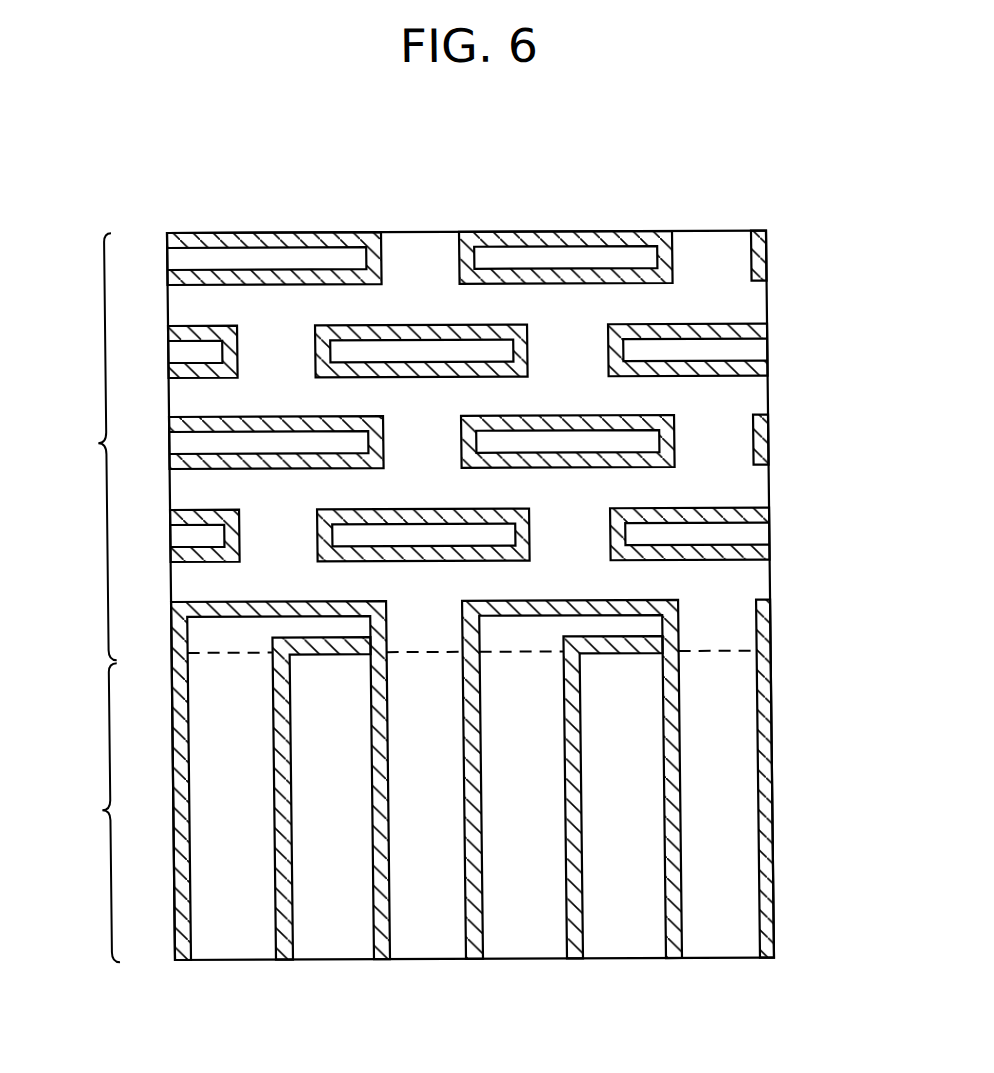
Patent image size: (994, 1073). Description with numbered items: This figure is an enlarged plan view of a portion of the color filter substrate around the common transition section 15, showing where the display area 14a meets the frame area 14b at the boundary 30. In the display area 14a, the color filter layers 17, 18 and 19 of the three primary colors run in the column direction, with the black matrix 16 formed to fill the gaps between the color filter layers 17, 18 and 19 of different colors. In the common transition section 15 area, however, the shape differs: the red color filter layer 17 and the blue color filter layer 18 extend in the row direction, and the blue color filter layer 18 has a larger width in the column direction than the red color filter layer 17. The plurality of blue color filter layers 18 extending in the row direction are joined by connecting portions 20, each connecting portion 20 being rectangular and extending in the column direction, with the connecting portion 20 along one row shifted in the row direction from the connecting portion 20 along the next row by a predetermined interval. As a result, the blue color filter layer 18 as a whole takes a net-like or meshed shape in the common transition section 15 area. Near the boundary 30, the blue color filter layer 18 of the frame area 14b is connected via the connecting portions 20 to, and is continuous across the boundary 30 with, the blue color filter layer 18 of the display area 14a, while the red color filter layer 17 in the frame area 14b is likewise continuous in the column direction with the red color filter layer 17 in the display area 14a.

The display area 14a is at (73, 812).
The frame area 14b is at (67, 446).
The common transition section 15 is at (285, 217).
The black matrix 16 is at (548, 233).
The red color filter layer 17 is at (615, 253).
The blue color filter layer 18 is at (710, 232).
The green color filter layer 19 is at (622, 961).
The connecting portion 20 is at (425, 607).
The boundary 30 is at (713, 653).